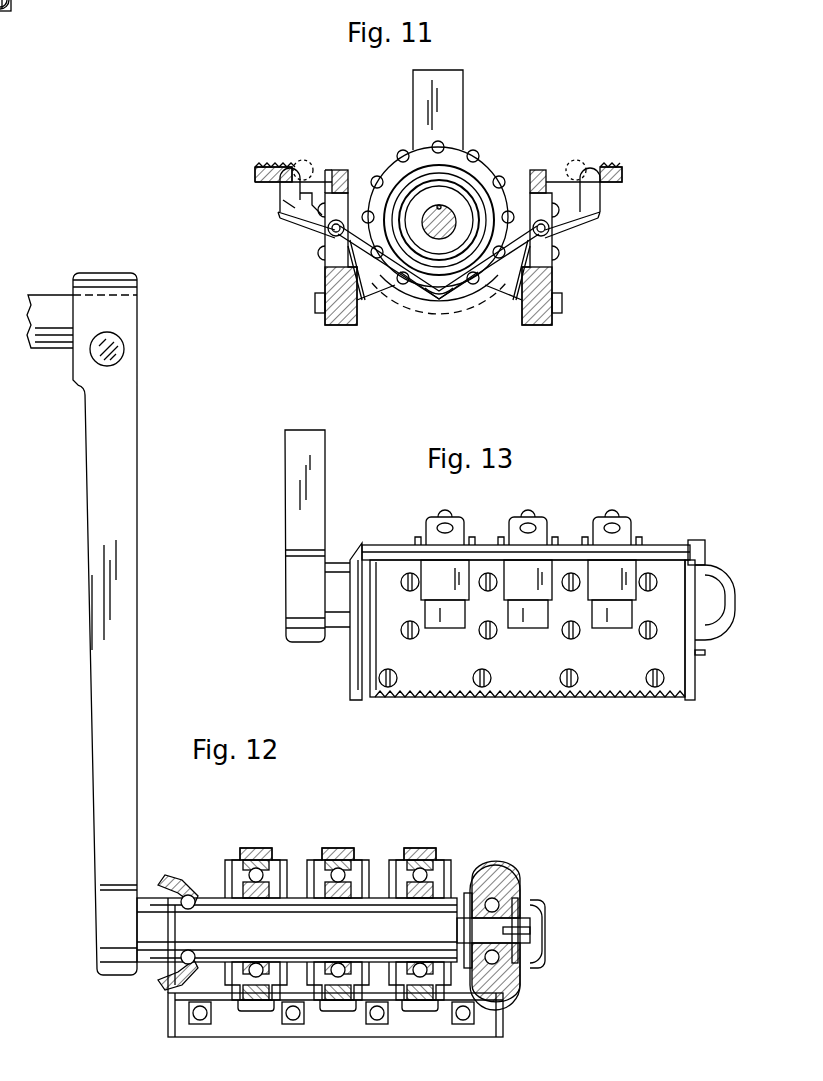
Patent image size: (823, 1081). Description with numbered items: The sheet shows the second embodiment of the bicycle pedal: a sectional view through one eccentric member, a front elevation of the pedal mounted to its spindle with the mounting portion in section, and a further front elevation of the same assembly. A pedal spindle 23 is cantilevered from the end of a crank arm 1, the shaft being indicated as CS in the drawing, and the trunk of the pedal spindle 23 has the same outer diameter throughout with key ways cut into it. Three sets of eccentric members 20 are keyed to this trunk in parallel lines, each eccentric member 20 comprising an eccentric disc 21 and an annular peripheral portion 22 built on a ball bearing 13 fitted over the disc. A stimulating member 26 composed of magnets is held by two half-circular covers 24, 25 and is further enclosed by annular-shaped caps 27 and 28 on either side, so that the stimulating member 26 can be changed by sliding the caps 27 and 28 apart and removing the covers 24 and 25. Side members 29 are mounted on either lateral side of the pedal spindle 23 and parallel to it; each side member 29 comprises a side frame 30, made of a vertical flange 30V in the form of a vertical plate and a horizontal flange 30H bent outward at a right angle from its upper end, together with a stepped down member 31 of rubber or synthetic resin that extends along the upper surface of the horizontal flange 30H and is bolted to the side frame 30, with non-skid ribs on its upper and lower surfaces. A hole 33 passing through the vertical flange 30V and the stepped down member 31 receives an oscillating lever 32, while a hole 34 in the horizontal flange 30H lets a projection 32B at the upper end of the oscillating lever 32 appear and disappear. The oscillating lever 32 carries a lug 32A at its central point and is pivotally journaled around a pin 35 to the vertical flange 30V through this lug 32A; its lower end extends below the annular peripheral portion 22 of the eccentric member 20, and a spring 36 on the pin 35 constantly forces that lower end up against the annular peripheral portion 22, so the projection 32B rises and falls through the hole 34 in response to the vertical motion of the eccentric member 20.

In FIG. 12, the crank arm 1 is at (128, 662).
In FIG. 12, the control shaft CS is at (45, 350).
In FIG. 12, the ball bearing 13 is at (425, 882).
In FIG. 11, the eccentric member 20 is at (502, 190).
In FIG. 12, the eccentric member 20 is at (565, 872).
In FIG. 11, the eccentric disc 21 is at (455, 195).
In FIG. 12, the eccentric disc 21 is at (440, 900).
In FIG. 11, the annular peripheral portion 22 is at (485, 160).
In FIG. 12, the annular peripheral portion 22 is at (396, 860).
In FIG. 11, the pedal spindle 23 is at (441, 240).
In FIG. 12, the pedal spindle 23 is at (380, 955).
In FIG. 11, the cover 24 is at (458, 150).
In FIG. 12, the cover 24 is at (410, 862).
In FIG. 11, the cover 25 is at (435, 286).
In FIG. 12, the cover 25 is at (481, 845).
In FIG. 12, the stimulating member 26 is at (420, 874).
In FIG. 12, the annular-shaped cap 27 is at (393, 880).
In FIG. 12, the annular-shaped cap 28 is at (450, 893).
In FIG. 11, the side member 29 is at (506, 244).
In FIG. 11, the side frame 30 is at (488, 244).
In FIG. 11, the horizontal flange 30H is at (615, 186).
In FIG. 11, the vertical flange 30V is at (553, 275).
In FIG. 11, the stepped down member 31 is at (553, 318).
In FIG. 11, the oscillating lever 32 is at (389, 204).
In FIG. 11, the lug 32A is at (347, 225).
In FIG. 11, the projection 32B is at (283, 172).
In FIG. 11, the hole 33 is at (333, 250).
In FIG. 11, the hole 34 is at (307, 193).
In FIG. 11, the pin 35 is at (318, 236).
In FIG. 11, the spring 36 is at (278, 212).